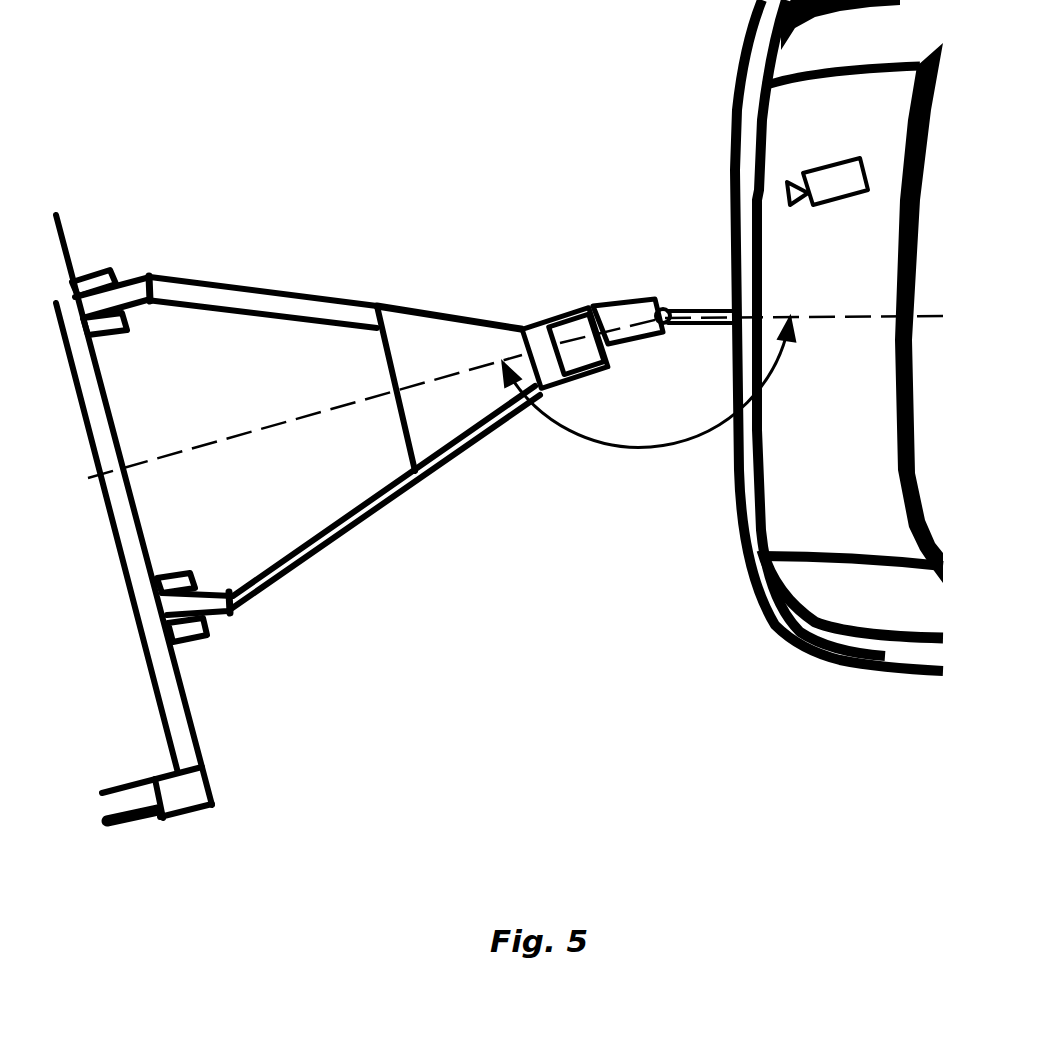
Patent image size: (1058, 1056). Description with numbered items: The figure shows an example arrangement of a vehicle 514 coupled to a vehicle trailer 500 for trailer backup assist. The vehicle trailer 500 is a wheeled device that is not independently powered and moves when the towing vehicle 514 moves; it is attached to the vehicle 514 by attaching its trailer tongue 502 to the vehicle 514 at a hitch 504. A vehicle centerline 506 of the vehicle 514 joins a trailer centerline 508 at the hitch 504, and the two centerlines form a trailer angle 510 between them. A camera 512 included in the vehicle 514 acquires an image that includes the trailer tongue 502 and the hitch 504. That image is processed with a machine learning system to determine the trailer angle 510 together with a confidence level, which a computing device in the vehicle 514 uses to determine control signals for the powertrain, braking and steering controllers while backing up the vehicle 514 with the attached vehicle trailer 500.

The vehicle trailer 500 is at (188, 695).
The trailer tongue 502 is at (415, 300).
The hitch 504 is at (670, 300).
The vehicle centerline 506 is at (873, 313).
The trailer centerline 508 is at (312, 422).
The trailer angle 510 is at (664, 453).
The camera 512 is at (830, 160).
The vehicle 514 is at (735, 104).